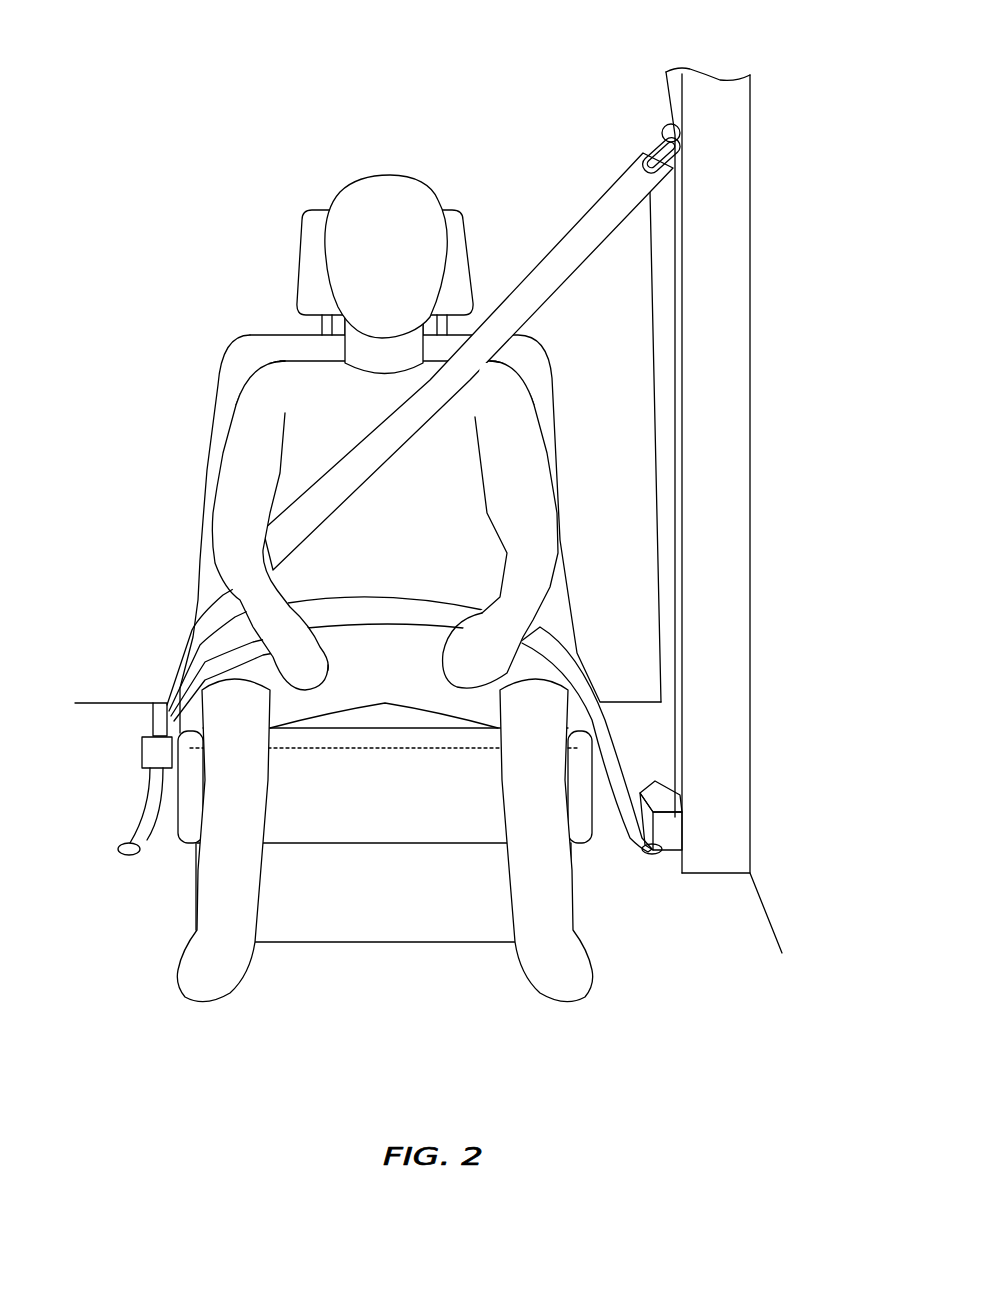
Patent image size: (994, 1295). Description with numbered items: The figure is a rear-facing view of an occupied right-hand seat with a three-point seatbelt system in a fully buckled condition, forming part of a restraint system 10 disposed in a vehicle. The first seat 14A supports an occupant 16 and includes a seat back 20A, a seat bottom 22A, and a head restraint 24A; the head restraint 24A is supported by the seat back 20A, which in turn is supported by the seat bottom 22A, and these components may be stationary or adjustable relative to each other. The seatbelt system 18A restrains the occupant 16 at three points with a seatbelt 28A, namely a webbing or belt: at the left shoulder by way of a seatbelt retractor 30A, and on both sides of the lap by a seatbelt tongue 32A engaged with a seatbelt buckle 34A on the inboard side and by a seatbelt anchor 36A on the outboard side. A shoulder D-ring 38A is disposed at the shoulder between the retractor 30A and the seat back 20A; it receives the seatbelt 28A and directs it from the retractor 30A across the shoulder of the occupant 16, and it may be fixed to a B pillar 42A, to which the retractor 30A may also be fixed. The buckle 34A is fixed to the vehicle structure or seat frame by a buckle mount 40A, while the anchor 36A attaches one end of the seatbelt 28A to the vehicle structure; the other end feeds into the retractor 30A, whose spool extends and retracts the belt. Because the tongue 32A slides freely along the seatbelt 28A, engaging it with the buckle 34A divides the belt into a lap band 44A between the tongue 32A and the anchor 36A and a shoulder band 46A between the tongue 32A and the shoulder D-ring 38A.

The restraint system 10 is at (583, 68).
The first seat 14A is at (236, 345).
The occupant 16 is at (203, 515).
The seatbelt system 18A is at (420, 494).
The seat back 20A is at (212, 392).
The seat bottom 22A is at (180, 835).
The head restraint 24A is at (298, 228).
The seatbelt 28A is at (680, 330).
The seatbelt retractor 30A is at (683, 823).
The seatbelt tongue 32A is at (153, 712).
The seatbelt buckle 34A is at (142, 750).
The seatbelt anchor 36A is at (655, 856).
The shoulder D-ring 38A is at (650, 141).
The buckle mount 40A is at (122, 845).
The B pillar 42A is at (757, 171).
The lap band 44A is at (390, 598).
The shoulder band 46A is at (563, 283).